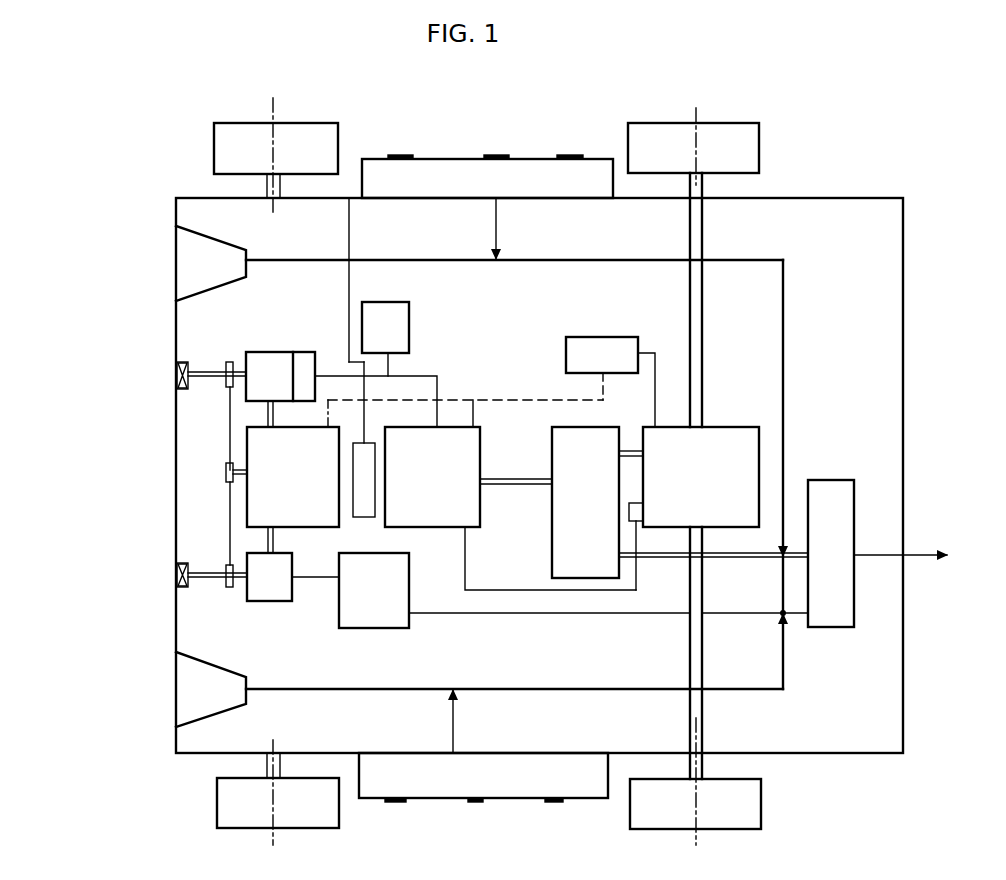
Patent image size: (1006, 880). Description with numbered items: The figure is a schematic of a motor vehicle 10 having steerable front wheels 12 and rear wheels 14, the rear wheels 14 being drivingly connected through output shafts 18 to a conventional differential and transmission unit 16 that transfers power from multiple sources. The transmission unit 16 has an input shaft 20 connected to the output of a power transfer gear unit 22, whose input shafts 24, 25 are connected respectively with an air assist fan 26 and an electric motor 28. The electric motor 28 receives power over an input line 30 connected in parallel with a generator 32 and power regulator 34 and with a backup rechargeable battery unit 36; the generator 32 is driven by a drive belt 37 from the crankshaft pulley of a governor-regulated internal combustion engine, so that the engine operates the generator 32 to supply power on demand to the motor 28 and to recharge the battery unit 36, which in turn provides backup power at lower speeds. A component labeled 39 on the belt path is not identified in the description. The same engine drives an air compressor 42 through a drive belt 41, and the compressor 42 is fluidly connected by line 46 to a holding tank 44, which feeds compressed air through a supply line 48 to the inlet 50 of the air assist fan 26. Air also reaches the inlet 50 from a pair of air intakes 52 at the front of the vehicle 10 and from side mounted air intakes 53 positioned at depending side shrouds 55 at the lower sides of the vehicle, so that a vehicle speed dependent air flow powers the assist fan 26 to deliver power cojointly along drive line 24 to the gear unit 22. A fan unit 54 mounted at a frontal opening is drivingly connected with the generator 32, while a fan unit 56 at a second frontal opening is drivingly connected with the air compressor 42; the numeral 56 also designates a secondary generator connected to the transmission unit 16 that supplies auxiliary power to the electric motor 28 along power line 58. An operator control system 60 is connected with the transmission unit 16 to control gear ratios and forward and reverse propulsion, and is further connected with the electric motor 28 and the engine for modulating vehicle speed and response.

The motor vehicle 10 is at (437, 757).
The steerable front wheels 12 is at (214, 146).
The rear wheels 14 is at (733, 152).
The differential and transmission unit 16 is at (701, 477).
The output shafts 18 is at (697, 382).
The input shaft 20 is at (630, 450).
The power transfer gear unit 22 is at (585, 502).
The input shaft 24 is at (762, 558).
The input shaft 25 is at (512, 477).
The air assist fan 26 is at (877, 553).
The electric motor 28 is at (414, 362).
The input line 30 is at (425, 375).
The generator 32 is at (265, 373).
The power regulator 34 is at (303, 352).
The backup rechargeable battery unit 36 is at (403, 322).
The drive belt 37 is at (230, 430).
The bearing 39 is at (226, 471).
The drive belt 41 is at (230, 530).
The air compressor 42 is at (270, 585).
The holding tank 44 is at (374, 590).
The line 46 is at (318, 580).
The supply line 48 is at (607, 613).
The inlet 50 is at (783, 613).
The air intakes 52 is at (190, 247).
The side mounted air intakes 53 is at (480, 803).
The fan unit 54 is at (575, 258).
The depending side shrouds 55 is at (597, 170).
The fan unit 56 is at (636, 520).
The power line 58 is at (497, 600).
The operator control system 60 is at (570, 352).